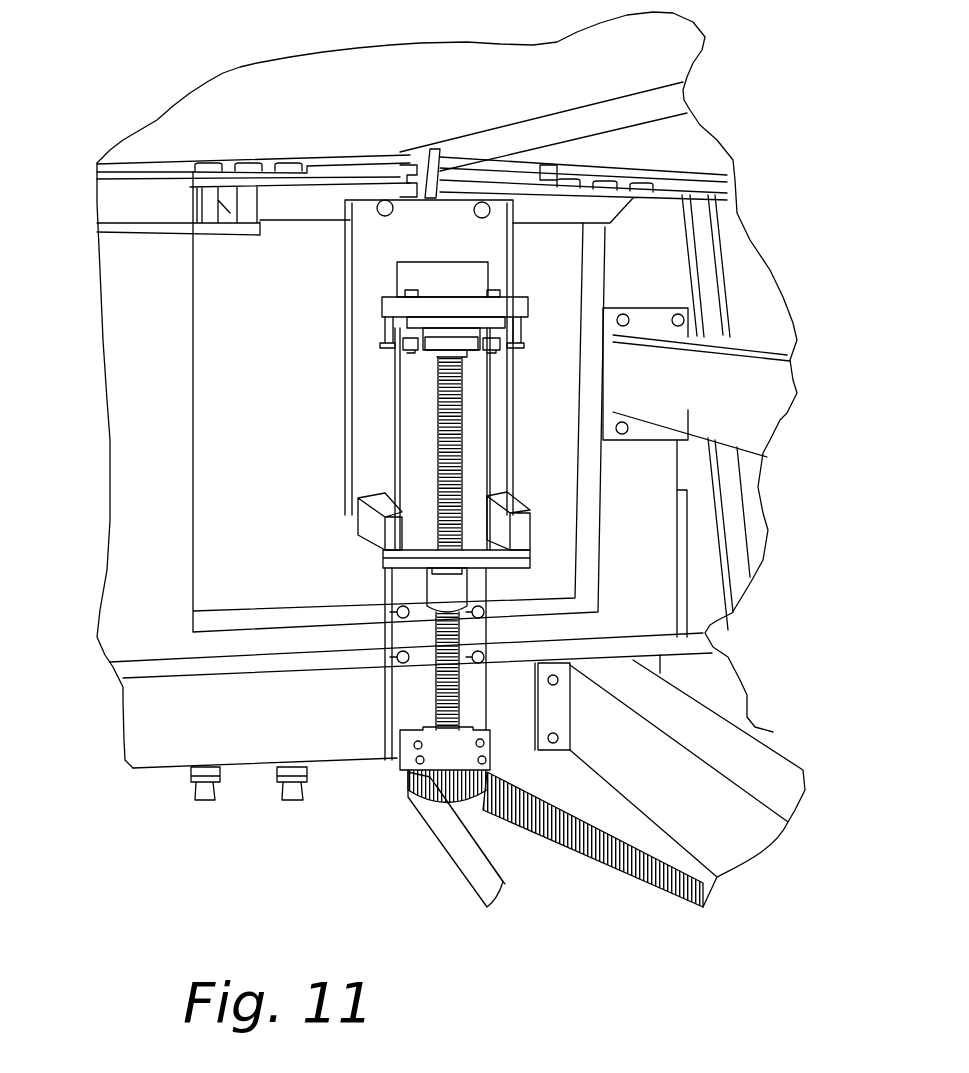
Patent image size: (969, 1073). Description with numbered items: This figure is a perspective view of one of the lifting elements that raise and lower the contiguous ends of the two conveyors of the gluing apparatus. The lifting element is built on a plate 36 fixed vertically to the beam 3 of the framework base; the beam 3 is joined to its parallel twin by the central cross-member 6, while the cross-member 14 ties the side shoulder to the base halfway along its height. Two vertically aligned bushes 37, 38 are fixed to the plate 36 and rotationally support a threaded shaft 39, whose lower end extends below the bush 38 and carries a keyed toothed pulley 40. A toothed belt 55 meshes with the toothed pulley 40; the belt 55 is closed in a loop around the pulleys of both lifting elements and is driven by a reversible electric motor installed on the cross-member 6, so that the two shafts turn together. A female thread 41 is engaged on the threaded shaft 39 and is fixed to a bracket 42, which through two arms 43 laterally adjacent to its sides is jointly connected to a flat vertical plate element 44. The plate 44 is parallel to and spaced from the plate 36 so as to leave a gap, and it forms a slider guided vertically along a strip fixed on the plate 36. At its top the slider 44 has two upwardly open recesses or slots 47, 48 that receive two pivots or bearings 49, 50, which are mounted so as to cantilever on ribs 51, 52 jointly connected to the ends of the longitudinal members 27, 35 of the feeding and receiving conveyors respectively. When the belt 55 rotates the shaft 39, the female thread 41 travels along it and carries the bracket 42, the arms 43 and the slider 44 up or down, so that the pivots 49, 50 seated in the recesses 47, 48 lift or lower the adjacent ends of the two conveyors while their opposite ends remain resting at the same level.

The longitudinal member 27 is at (170, 172).
The rib 51 is at (295, 197).
The pivot or bearing 49 is at (383, 197).
The pivot or bearing 50 is at (480, 197).
The rib 52 is at (557, 200).
The longitudinal member 35 is at (690, 163).
The recess or slot 47 is at (380, 217).
The recess or slot 48 is at (478, 217).
The vertical plate element 44 is at (360, 363).
The bush 37 is at (432, 353).
The plate 36 is at (400, 468).
The arm 43 is at (520, 513).
The female thread 41 is at (437, 590).
The bracket 42 is at (507, 570).
The threaded shaft 39 is at (437, 680).
The cross-member 14 is at (753, 403).
The beam 3 is at (710, 672).
The cross-member 6 is at (713, 737).
The bush 38 is at (410, 765).
The toothed pulley 40 is at (452, 797).
The toothed belt 55 is at (593, 857).